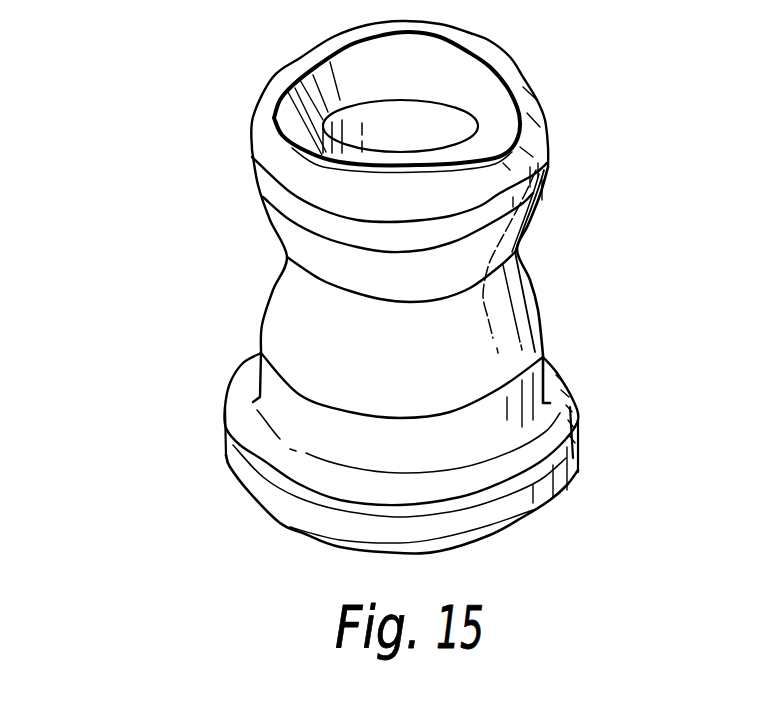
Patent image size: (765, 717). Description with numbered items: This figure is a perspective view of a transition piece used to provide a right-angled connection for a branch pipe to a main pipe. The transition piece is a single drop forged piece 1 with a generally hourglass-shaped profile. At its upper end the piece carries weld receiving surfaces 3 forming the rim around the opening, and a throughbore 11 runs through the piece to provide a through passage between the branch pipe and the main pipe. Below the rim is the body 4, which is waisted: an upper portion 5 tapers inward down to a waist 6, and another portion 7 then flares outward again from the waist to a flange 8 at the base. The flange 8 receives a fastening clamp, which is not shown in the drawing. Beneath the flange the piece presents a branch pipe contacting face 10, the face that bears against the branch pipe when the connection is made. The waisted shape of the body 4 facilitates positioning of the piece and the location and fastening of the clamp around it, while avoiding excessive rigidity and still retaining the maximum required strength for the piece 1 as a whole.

The drop forged piece 1 is at (193, 382).
The weld receiving surfaces 3 is at (287, 75).
The body 4 is at (560, 237).
The tapering portion 5 is at (283, 232).
The waist 6 is at (317, 285).
The flaring portion 7 is at (518, 315).
The flange 8 is at (557, 480).
The branch pipe contacting face 10 is at (300, 533).
The throughbore 11 is at (430, 127).